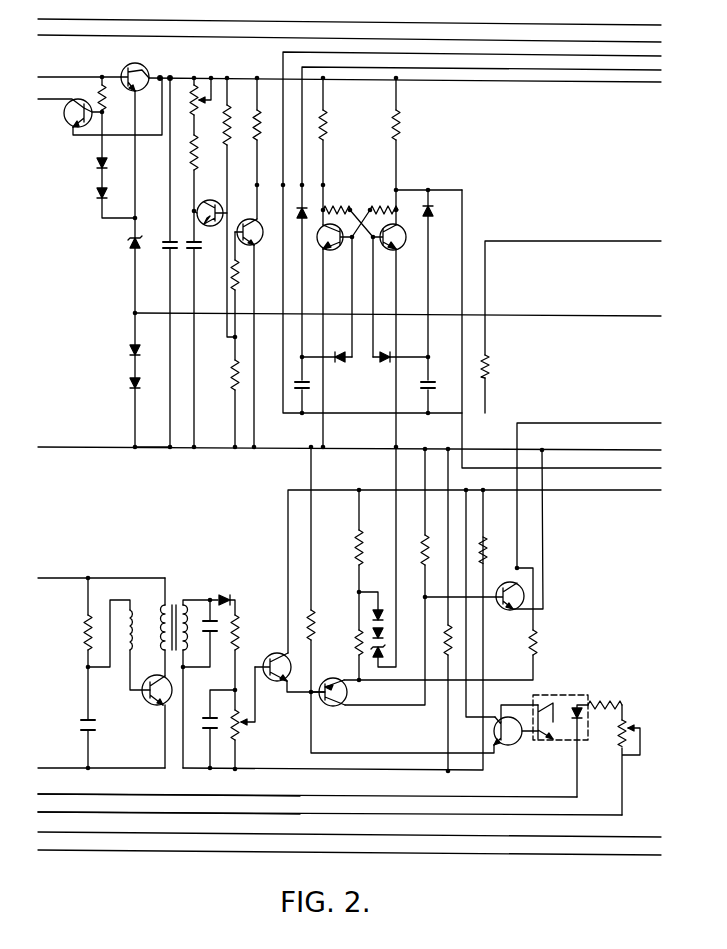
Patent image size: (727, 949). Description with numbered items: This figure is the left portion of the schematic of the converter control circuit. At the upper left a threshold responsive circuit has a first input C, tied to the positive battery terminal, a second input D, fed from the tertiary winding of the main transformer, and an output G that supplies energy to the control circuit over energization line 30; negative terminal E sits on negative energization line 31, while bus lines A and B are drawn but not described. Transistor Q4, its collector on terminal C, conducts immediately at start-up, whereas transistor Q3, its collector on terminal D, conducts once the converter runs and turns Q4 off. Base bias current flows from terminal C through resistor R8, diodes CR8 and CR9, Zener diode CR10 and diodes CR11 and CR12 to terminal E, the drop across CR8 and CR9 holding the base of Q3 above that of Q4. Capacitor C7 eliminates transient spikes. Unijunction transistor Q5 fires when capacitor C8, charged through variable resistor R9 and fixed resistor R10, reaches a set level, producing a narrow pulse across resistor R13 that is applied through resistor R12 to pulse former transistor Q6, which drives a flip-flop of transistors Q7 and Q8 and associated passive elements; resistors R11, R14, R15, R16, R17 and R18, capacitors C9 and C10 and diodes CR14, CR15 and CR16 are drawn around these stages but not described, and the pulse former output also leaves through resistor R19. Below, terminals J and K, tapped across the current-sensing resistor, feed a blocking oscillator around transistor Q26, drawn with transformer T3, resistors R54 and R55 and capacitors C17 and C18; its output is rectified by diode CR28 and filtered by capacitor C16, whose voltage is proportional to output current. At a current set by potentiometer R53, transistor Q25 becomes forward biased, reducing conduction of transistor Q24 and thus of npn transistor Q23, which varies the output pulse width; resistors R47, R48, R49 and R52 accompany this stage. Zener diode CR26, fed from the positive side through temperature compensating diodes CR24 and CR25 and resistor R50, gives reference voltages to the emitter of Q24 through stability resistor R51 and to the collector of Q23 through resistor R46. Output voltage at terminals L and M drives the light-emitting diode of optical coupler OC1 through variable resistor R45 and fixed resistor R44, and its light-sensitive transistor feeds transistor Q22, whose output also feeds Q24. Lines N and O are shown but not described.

The bus line A is at (342, 19).
The bus line B is at (342, 36).
The first input C is at (342, 72).
The second input D is at (54, 99).
The negative terminal E is at (342, 442).
The output G is at (160, 71).
The energization line 30 is at (191, 78).
The negative energization line 31 is at (155, 452).
The terminal J is at (94, 578).
The terminal K is at (94, 768).
The terminal L is at (162, 794).
The terminal M is at (161, 813).
The line N is at (342, 833).
The line O is at (342, 851).
The transistor Q3 is at (72, 113).
The transistor Q4 is at (135, 70).
The unijunction transistor Q5 is at (210, 204).
The pulse former transistor Q6 is at (247, 225).
The flip-flop transistor Q7 is at (334, 247).
The flip-flop transistor Q8 is at (389, 246).
The transistor Q22 is at (516, 741).
The npn transistor Q23 is at (514, 539).
The transistor Q24 is at (329, 684).
The transistor Q25 is at (273, 678).
The blocking oscillator transistor Q26 is at (150, 700).
The resistor R8 is at (111, 97).
The variable resistor R9 is at (193, 96).
The fixed resistor R10 is at (209, 152).
The resistor R11 is at (223, 125).
The resistor R12 is at (243, 275).
The resistor R13 is at (222, 375).
The resistor R14 is at (270, 125).
The resistor R15 is at (336, 125).
The resistor R16 is at (338, 201).
The resistor R17 is at (384, 201).
The resistor R18 is at (410, 125).
The resistor R19 is at (499, 367).
The fixed resistor R44 is at (605, 694).
The variable resistor R45 is at (614, 733).
The resistor R46 is at (547, 642).
The resistor R47 is at (493, 549).
The resistor R48 is at (439, 642).
The resistor R49 is at (434, 550).
The resistor R50 is at (373, 547).
The resistor R51 is at (347, 642).
The resistor R52 is at (303, 625).
The potentiometer R53 is at (250, 725).
The resistor R54 is at (250, 632).
The resistor R55 is at (74, 632).
The capacitor C7 is at (176, 255).
The capacitor C8 is at (200, 255).
The capacitor C9 is at (309, 394).
The capacitor C10 is at (439, 394).
The capacitor C16 is at (201, 719).
The capacitor C17 is at (203, 632).
The capacitor C18 is at (102, 728).
The diode CR8 is at (84, 164).
The diode CR9 is at (84, 194).
The Zener diode CR10 is at (115, 250).
The diode CR11 is at (116, 352).
The diode CR12 is at (115, 385).
The diode CR14 is at (333, 367).
The diode CR15 is at (396, 370).
The diode CR16 is at (445, 217).
The temperature compensating diode CR24 is at (371, 618).
The temperature compensating diode CR25 is at (384, 634).
The Zener diode CR26 is at (385, 654).
The diode CR28 is at (229, 589).
The transformer T3 is at (159, 616).
The light-emitting diode and light-sensitive transistor combination OC1 is at (573, 691).